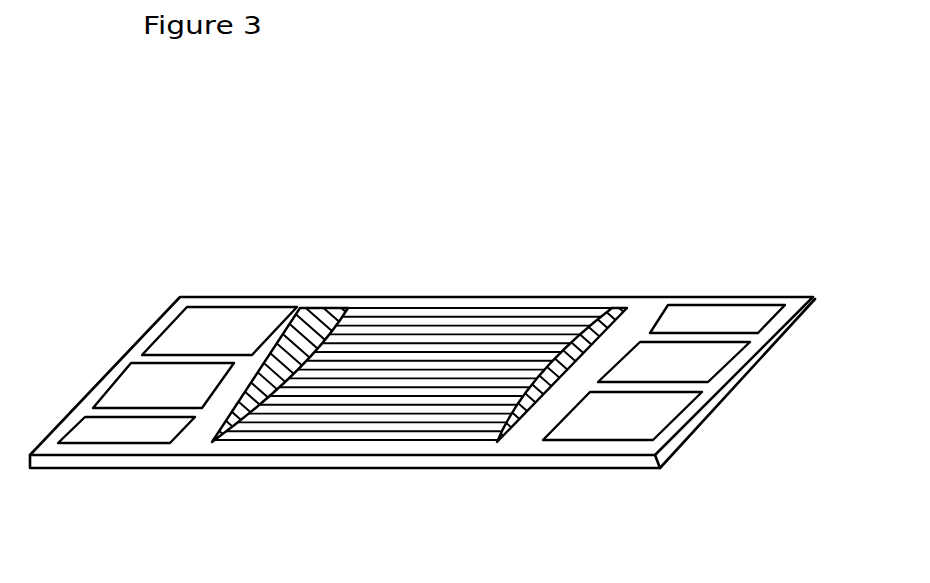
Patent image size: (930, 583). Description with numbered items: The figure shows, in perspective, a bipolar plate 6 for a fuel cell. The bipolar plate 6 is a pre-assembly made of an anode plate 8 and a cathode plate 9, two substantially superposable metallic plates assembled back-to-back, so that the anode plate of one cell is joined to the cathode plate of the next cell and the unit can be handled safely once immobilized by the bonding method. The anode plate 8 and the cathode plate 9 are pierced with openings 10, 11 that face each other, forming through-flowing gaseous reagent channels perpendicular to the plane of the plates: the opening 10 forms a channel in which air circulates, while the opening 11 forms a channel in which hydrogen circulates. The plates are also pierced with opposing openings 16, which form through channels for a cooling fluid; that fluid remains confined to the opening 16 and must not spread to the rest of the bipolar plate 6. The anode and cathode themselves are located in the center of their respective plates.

The bipolar plate 6 is at (222, 216).
The anode plate 8 is at (418, 450).
The cathode plate 9 is at (422, 468).
The opening 10 is at (212, 327).
The opening 11 is at (118, 427).
The opening 16 is at (157, 388).